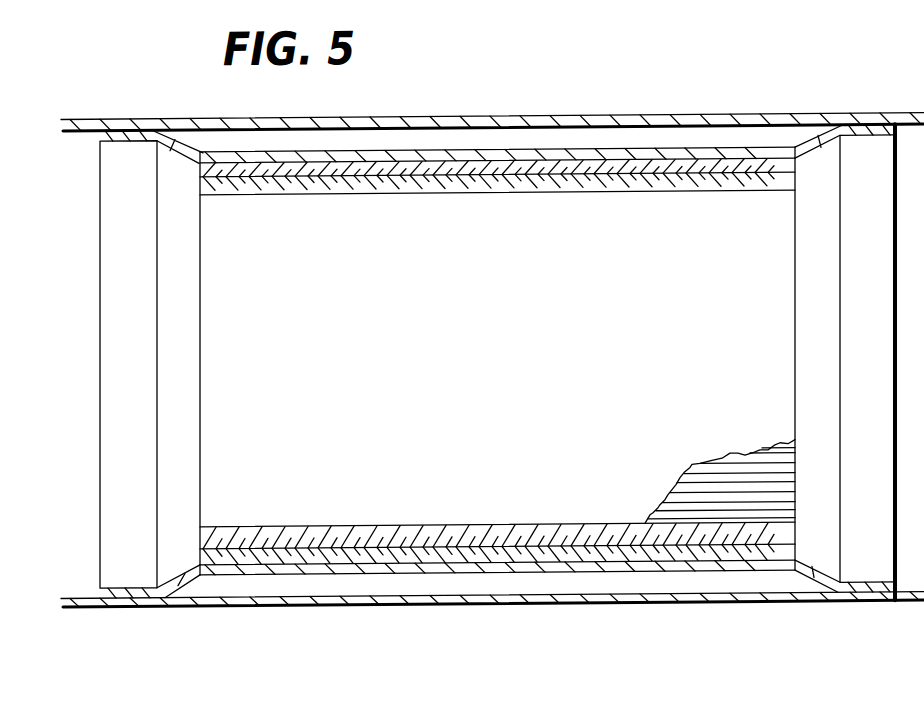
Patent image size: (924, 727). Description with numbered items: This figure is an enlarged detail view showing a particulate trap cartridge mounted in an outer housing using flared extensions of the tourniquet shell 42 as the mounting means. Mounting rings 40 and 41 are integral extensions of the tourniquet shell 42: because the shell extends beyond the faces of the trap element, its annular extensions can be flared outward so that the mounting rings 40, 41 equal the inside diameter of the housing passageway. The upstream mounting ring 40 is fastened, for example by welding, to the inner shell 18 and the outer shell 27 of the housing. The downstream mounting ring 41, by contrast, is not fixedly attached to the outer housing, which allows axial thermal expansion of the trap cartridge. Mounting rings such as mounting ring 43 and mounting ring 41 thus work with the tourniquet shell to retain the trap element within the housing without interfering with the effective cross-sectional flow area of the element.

The inner shell 18 is at (710, 119).
The outer shell 27 is at (625, 608).
The upstream mounting ring 40 is at (145, 593).
The downstream mounting ring 41 is at (873, 594).
The tourniquet shell 42 is at (363, 568).
The mounting ring 43 is at (100, 591).